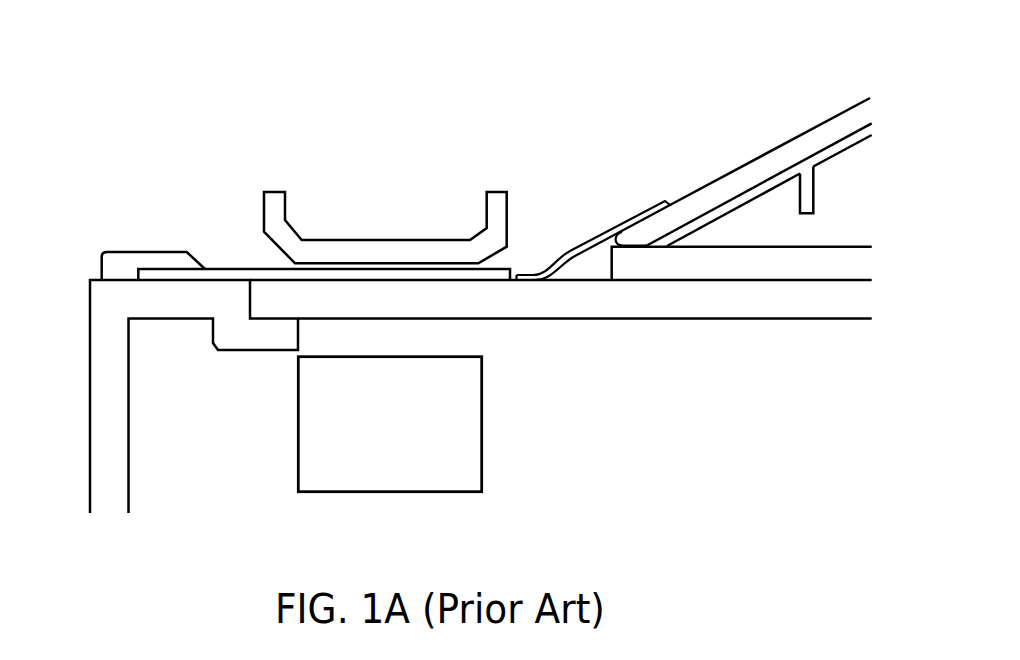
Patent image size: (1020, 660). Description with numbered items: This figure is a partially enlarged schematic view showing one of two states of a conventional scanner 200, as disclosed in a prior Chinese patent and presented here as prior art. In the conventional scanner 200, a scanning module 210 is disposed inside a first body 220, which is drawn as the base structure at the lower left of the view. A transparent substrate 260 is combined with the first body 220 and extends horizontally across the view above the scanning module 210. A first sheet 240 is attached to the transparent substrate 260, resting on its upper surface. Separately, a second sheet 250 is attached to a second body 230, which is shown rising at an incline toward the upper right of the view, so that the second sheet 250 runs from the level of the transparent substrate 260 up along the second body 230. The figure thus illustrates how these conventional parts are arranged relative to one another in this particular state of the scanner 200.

The scanner 200 is at (427, 86).
The scanning module 210 is at (417, 446).
The first body 220 is at (100, 305).
The second body 230 is at (753, 163).
The first sheet 240 is at (245, 270).
The second sheet 250 is at (578, 248).
The transparent substrate 260 is at (717, 302).